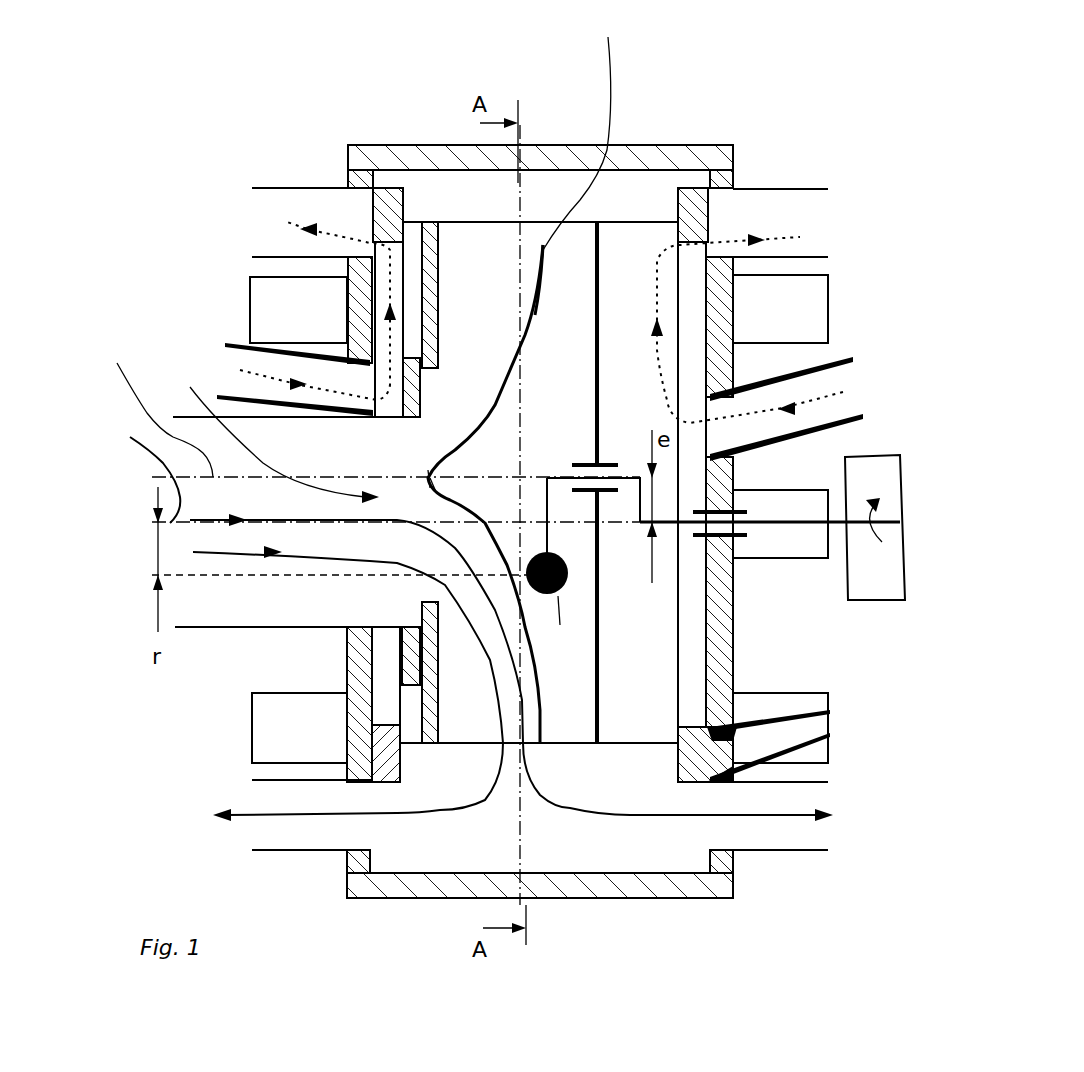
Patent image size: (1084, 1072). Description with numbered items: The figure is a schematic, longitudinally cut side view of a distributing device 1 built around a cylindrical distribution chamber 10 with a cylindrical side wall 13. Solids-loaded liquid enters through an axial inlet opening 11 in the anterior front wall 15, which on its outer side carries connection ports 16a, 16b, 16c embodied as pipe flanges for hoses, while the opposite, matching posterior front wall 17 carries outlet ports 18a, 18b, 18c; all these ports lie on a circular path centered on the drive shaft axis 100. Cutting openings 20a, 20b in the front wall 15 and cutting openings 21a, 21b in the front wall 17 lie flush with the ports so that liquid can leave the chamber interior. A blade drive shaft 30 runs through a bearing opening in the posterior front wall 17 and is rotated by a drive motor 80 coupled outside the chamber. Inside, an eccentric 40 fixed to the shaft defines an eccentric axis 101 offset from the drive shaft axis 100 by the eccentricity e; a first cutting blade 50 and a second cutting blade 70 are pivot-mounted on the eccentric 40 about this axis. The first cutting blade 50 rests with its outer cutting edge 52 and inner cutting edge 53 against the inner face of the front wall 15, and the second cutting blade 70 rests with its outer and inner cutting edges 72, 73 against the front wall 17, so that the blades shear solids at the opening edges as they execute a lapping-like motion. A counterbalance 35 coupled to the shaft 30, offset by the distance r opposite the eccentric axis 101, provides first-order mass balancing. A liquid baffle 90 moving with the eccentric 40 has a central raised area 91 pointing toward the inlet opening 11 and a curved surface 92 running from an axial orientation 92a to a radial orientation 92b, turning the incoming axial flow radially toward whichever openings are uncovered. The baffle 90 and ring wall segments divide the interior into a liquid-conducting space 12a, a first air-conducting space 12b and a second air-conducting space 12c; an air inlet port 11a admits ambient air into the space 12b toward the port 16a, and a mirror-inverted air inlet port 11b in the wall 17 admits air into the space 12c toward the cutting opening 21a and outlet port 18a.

The distributing device 1 is at (644, 98).
The distribution chamber 10 is at (561, 140).
The inlet opening 11 is at (289, 429).
The air inlet port 11a is at (257, 368).
The air inlet port 11b is at (823, 380).
The liquid-conducting space 12a is at (743, 600).
The first air-conducting space 12b is at (413, 303).
The second air-conducting space 12c is at (657, 372).
The cylindrical side wall 13 is at (600, 888).
The anterior front wall 15 is at (347, 657).
The connection port 16a is at (283, 188).
The connection port 16b is at (295, 852).
The connection port 16c is at (273, 732).
The posterior front wall 17 is at (720, 657).
The outlet port 18a is at (783, 188).
The outlet port 18b is at (778, 850).
The outlet port 18c is at (800, 708).
The cutting opening 20a is at (363, 203).
The cutting opening 20b is at (362, 833).
The cutting opening 21a is at (720, 203).
The cutting opening 21b is at (713, 832).
The blade drive shaft 30 is at (663, 510).
The counterbalance 35 is at (583, 572).
The eccentric 40 is at (597, 372).
The first cutting blade 50 is at (365, 205).
The outer cutting edge 52 is at (365, 788).
The inner cutting edge 53 is at (362, 723).
The second cutting blade 70 is at (693, 200).
The outer cutting edge 72 is at (830, 735).
The inner cutting edge 73 is at (830, 712).
The drive motor 80 is at (882, 470).
The liquid baffle 90 is at (579, 127).
The central raised area 91 is at (427, 480).
The curved surface 92 is at (489, 423).
The axial orientation 92a is at (442, 455).
The radial orientation 92b is at (537, 311).
The drive shaft axis 100 is at (457, 618).
The eccentric axis 101 is at (150, 406).